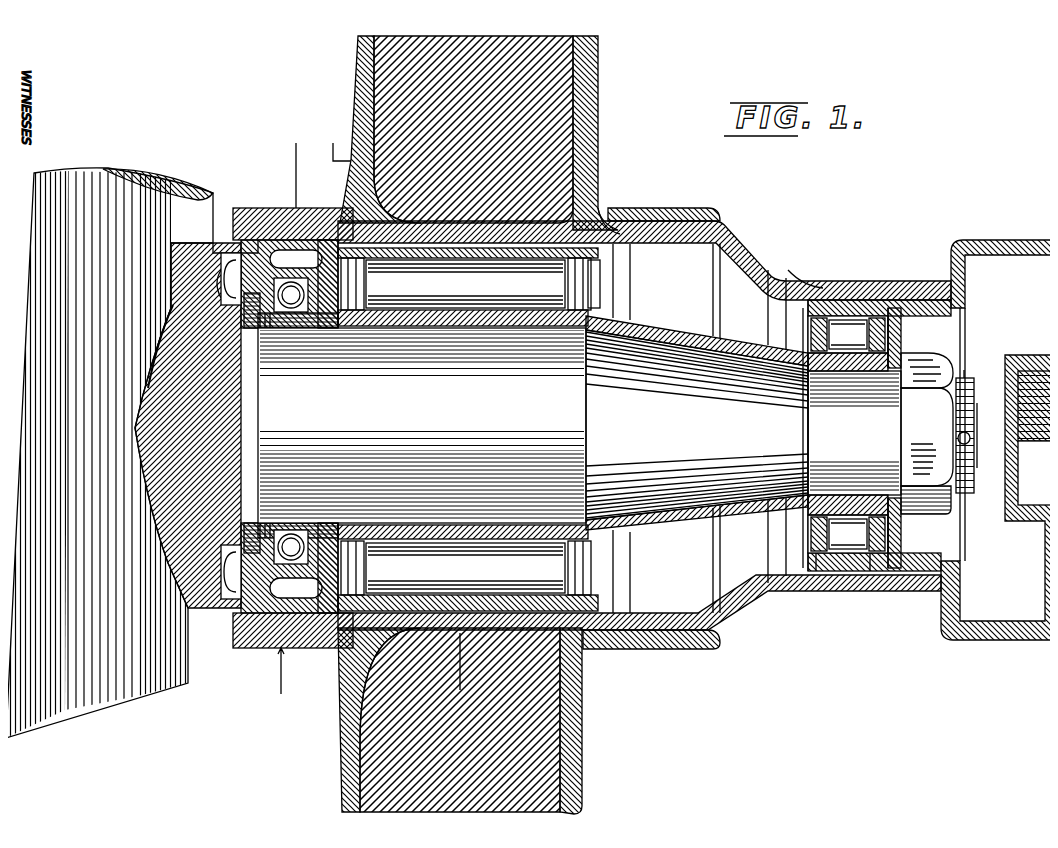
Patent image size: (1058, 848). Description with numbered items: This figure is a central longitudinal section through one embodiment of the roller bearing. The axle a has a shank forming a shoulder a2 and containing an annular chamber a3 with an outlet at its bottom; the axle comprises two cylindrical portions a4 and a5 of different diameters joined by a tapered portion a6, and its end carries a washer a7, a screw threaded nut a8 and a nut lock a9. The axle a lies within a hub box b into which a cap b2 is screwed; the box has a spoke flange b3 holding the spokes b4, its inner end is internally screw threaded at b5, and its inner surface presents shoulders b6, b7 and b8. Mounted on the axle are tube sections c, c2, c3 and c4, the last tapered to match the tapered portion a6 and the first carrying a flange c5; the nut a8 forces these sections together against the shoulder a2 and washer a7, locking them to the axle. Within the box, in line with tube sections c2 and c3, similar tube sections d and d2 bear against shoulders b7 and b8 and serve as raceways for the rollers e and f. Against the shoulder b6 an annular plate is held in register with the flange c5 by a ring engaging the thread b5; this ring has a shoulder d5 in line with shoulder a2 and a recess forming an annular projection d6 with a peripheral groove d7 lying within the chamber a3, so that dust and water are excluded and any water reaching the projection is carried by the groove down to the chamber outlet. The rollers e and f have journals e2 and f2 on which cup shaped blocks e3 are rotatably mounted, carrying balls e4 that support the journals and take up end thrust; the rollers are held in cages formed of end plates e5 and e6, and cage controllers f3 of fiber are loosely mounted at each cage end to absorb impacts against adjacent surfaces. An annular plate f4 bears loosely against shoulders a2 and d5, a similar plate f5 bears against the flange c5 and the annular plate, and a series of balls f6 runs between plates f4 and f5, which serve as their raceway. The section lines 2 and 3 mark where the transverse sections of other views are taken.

The axle a is at (422, 425).
The shoulder a2 is at (845, 296).
The annular chamber a3 is at (214, 262).
The cylindrical portion a4 is at (250, 200).
The cylindrical portion a5 is at (852, 435).
The tapered portion a6 is at (697, 425).
The washer a7 is at (927, 433).
The screw threaded nut a8 is at (927, 437).
The nut lock a9 is at (962, 378).
The hub box b is at (722, 222).
The cap b2 is at (1012, 234).
The spoke flange b3 is at (592, 141).
The spokes b4 is at (552, 98).
The internal screw thread b5 is at (275, 210).
The shoulder b6 is at (335, 214).
The shoulder b7 is at (602, 216).
The shoulder b8 is at (792, 278).
The tube section c is at (293, 312).
The tube section c2 is at (486, 302).
The tube section c3 is at (866, 365).
The tube section c4 is at (663, 326).
The flange c5 is at (303, 312).
The tube section d is at (430, 250).
The tube section d2 is at (836, 564).
The shoulder d5 is at (164, 297).
The annular projection d6 is at (210, 270).
The peripheral groove d7 is at (236, 230).
The rollers e is at (465, 426).
The journals e2 is at (356, 557).
The cup shaped blocks e3 is at (354, 266).
The balls e4 is at (808, 564).
The end plate e5 is at (800, 336).
The end plate e6 is at (560, 282).
The rollers f is at (848, 434).
The journals f2 is at (800, 527).
The cage controllers f3 is at (312, 232).
The annular plate f4 is at (264, 518).
The plate f5 is at (300, 518).
The balls f6 is at (262, 322).
The line 2— 2 is at (288, 417).
The line 3— 3 is at (395, 415).